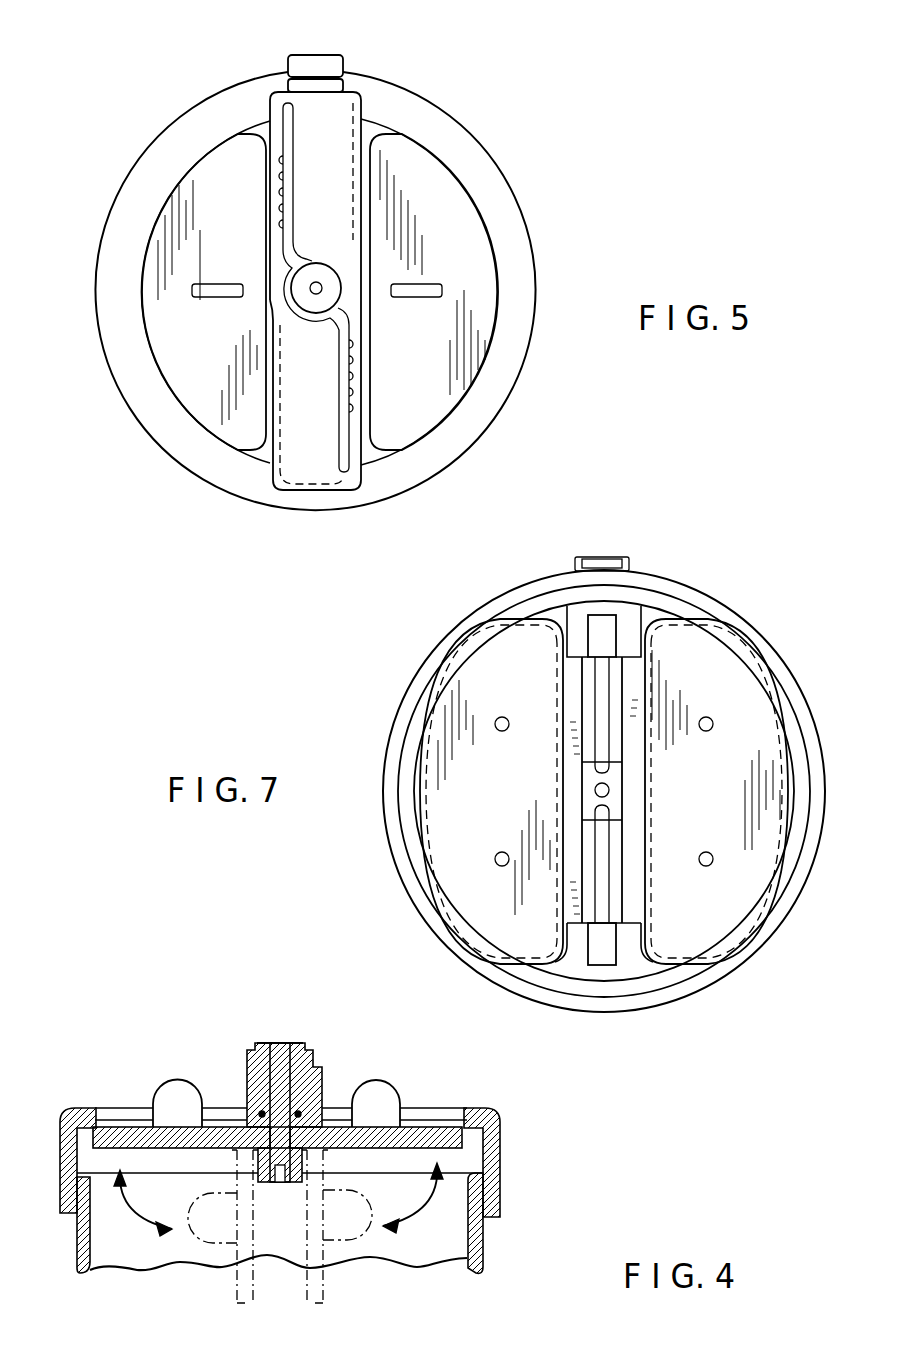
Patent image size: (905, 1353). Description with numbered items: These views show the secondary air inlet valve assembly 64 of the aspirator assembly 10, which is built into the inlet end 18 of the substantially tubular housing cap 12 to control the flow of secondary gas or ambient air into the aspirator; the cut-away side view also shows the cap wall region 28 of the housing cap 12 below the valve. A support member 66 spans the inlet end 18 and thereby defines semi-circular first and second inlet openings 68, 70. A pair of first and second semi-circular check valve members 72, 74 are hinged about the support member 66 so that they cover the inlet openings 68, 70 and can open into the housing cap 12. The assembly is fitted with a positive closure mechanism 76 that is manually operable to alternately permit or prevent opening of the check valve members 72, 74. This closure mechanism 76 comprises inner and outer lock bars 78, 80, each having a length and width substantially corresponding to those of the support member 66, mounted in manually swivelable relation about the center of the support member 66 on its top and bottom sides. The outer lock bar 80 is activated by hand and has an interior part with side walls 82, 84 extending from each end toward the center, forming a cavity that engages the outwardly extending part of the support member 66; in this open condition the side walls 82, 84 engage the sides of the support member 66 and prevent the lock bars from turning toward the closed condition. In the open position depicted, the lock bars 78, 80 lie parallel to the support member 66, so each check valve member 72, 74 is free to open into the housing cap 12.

In FIG. 4, the aspirator assembly 10 is at (453, 1238).
In FIG. 4, the housing cap 12 is at (500, 1163).
In FIG. 4, the inlet end 18 is at (127, 1108).
In FIG. 4, the container side wall 28 is at (483, 1235).
In FIG. 4, the secondary air inlet valve assembly 64 is at (330, 1070).
In FIG. 4, the support member 66 is at (242, 1108).
In FIG. 4, the first inlet opening 68 is at (105, 1108).
In FIG. 4, the second inlet opening 70 is at (450, 1113).
In FIG. 5, the first check valve member 72 is at (427, 175).
In FIG. 7, the first check valve member 72 is at (733, 720).
In FIG. 4, the first check valve member 72 is at (146, 1128).
In FIG. 5, the second check valve member 74 is at (215, 190).
In FIG. 7, the second check valve member 74 is at (479, 829).
In FIG. 4, the second check valve member 74 is at (422, 1128).
In FIG. 4, the positive closure mechanism 76 is at (298, 1030).
In FIG. 7, the inner lock bar 78 is at (607, 688).
In FIG. 5, the outer lock bar 80 is at (338, 115).
In FIG. 5, the side wall 82 is at (275, 467).
In FIG. 5, the side wall 84 is at (348, 100).